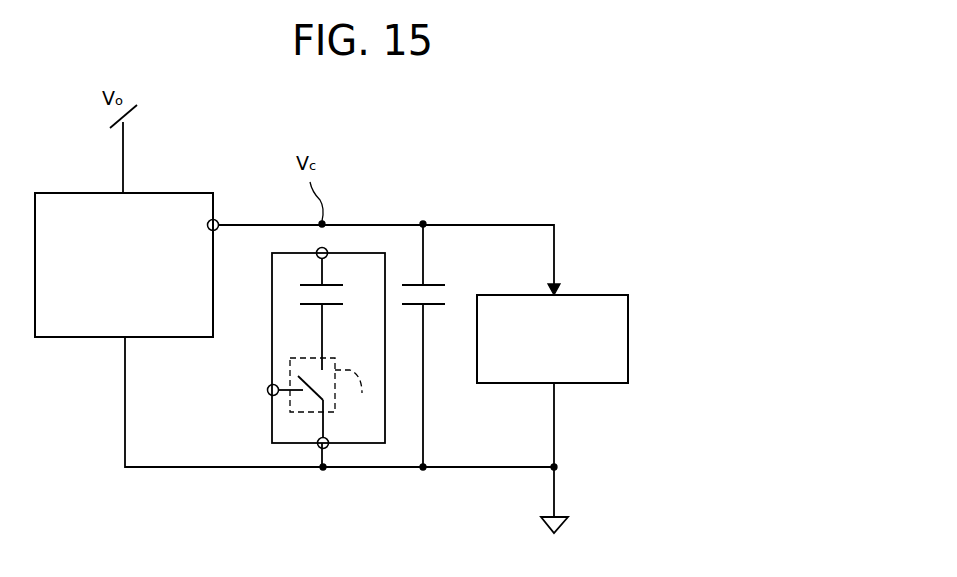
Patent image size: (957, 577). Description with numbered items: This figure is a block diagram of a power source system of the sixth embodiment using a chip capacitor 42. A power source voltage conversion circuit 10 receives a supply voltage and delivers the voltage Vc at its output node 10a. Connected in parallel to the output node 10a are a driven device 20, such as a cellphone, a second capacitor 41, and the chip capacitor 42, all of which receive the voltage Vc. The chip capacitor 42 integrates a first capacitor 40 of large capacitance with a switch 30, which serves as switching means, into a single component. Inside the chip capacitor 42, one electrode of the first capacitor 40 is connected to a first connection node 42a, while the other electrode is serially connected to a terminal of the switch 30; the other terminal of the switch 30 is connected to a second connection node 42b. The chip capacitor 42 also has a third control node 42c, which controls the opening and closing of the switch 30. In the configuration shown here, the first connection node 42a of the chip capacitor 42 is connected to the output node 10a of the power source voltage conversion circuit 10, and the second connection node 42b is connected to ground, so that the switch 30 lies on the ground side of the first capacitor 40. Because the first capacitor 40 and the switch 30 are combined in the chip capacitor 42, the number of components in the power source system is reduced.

The power source voltage conversion circuit 10 is at (153, 192).
The output node 10a is at (216, 221).
The driven device 20 is at (595, 294).
The switch 30 is at (329, 390).
The first capacitor 40 is at (333, 307).
The second capacitor 41 is at (433, 305).
The chip capacitor 42 is at (270, 336).
The first connection node 42a is at (327, 249).
The second connection node 42b is at (318, 449).
The third control node 42c is at (269, 394).